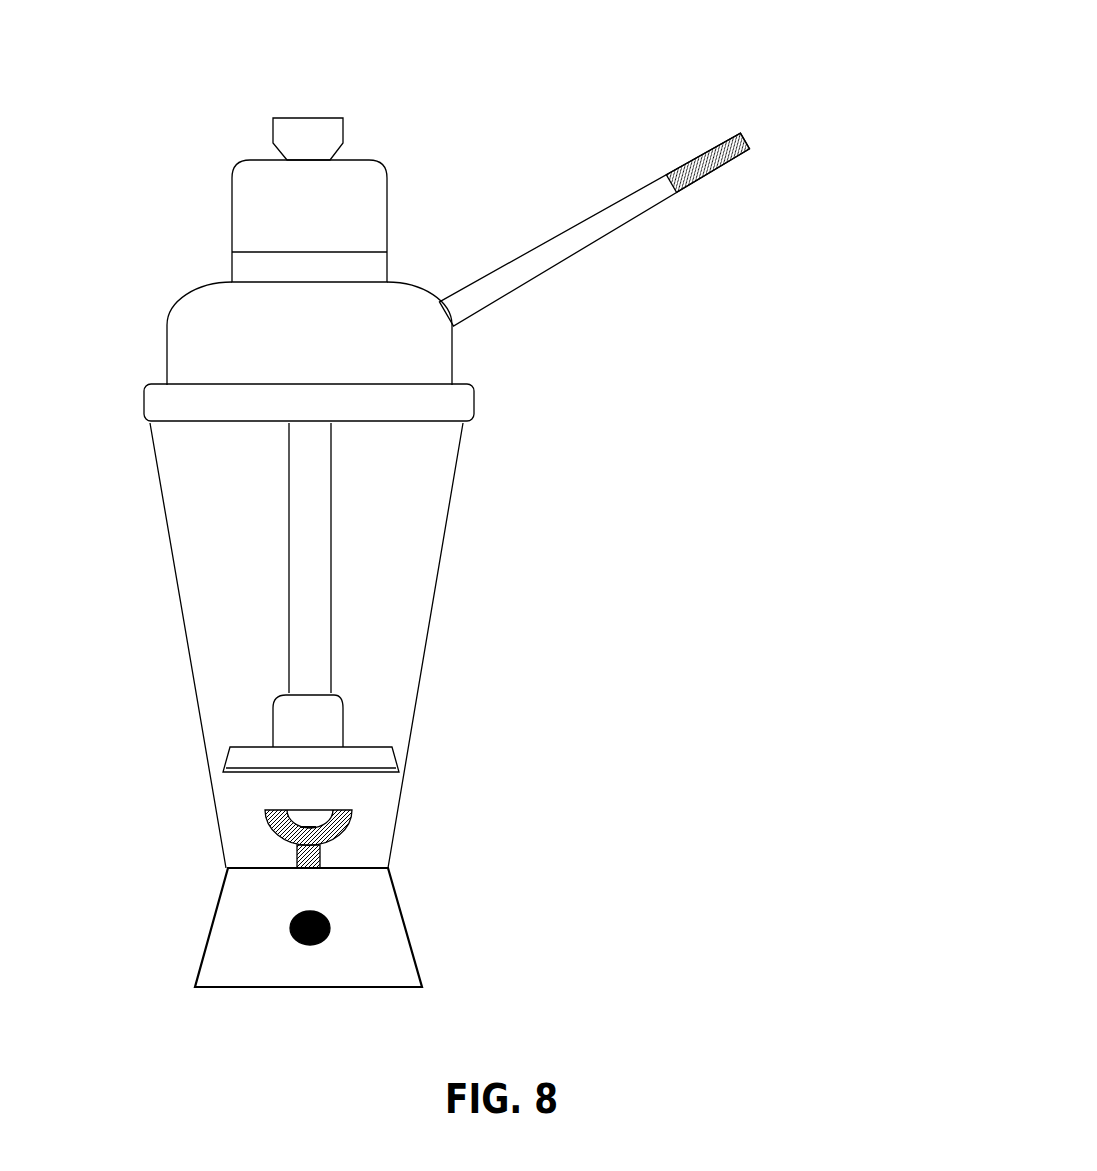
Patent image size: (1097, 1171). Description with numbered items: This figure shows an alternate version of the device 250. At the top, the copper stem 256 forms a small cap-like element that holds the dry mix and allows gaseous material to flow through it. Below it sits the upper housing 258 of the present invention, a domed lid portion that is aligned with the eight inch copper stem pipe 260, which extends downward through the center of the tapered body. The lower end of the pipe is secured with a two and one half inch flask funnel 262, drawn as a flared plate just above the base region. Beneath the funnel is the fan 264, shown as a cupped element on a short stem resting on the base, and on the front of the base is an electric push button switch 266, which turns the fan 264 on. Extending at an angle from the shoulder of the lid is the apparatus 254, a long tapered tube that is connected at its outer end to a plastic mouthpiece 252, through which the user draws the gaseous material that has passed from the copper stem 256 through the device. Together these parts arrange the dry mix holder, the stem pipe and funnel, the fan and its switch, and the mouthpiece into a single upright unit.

The device 250 is at (774, 62).
The plastic mouthpiece 252 is at (717, 172).
The apparatus 254 is at (547, 271).
The copper stem 256 is at (290, 120).
The housing 258 is at (167, 325).
The copper stem pipe 260 is at (292, 539).
The flask funnel 262 is at (345, 747).
The fan 264 is at (267, 815).
The electric push button switch 266 is at (330, 928).